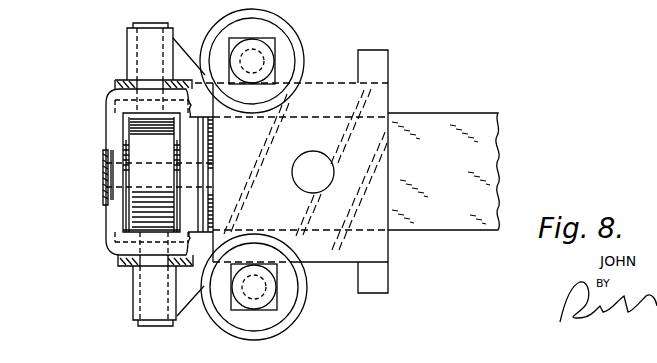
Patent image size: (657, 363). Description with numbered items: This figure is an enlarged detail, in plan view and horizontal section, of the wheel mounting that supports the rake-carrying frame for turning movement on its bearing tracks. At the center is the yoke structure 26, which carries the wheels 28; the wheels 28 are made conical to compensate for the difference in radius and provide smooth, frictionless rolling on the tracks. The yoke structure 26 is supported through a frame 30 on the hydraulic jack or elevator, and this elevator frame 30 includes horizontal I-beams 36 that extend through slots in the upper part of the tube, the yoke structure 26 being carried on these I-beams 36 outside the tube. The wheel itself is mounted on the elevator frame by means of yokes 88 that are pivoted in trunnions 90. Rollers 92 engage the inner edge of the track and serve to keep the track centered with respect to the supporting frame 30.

The yoke structure 26 is at (99, 239).
The wheels 28 is at (138, 173).
The frame 30 is at (420, 0).
The horizontal I-beams 36 is at (502, 141).
The yokes 88 is at (115, 131).
The trunnions 90 is at (133, 298).
The rollers 92 is at (272, 95).